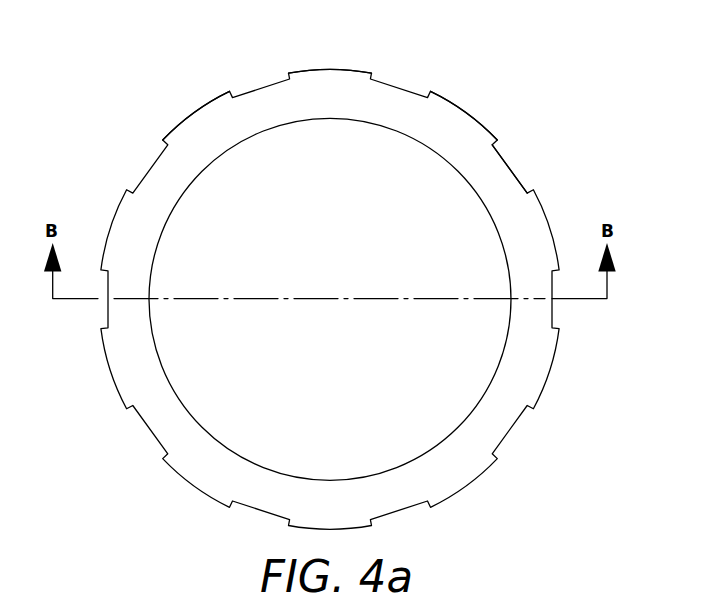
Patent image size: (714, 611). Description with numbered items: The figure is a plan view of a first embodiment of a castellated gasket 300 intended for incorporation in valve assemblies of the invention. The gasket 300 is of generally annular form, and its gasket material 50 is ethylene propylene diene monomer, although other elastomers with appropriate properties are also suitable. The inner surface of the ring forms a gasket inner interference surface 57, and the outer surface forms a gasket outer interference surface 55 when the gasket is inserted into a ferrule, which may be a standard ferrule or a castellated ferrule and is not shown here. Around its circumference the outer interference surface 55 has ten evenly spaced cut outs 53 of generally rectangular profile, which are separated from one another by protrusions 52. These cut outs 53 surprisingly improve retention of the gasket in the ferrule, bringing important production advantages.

The castellated gasket 300 is at (177, 32).
The gasket material 50 is at (326, 77).
The protrusions 52 is at (447, 100).
The cut outs 53 is at (511, 166).
The gasket outer interference surface 55 is at (182, 121).
The gasket inner interference surface 57 is at (152, 286).